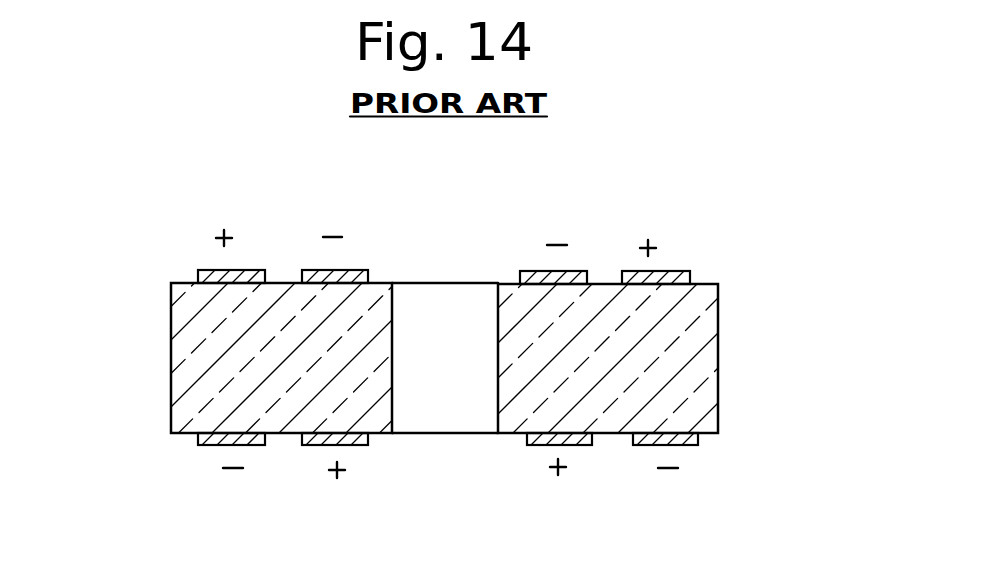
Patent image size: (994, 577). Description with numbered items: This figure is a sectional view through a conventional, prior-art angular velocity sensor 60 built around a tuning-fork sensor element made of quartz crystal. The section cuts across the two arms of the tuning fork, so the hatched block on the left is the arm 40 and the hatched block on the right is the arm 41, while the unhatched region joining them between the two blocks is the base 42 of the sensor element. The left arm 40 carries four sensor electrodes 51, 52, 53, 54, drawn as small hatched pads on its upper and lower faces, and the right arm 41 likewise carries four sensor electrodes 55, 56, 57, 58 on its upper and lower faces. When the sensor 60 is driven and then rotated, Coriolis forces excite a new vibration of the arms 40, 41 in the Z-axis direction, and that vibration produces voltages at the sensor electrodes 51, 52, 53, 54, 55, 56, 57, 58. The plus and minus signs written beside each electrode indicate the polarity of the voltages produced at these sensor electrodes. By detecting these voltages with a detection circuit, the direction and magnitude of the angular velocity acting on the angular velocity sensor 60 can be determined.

The arm 40 is at (195, 323).
The arm 41 is at (697, 410).
The base 42 is at (455, 415).
The sensor electrode 51 is at (212, 440).
The sensor electrode 52 is at (310, 445).
The sensor electrode 53 is at (250, 268).
The sensor electrode 54 is at (348, 268).
The sensor electrode 55 is at (540, 443).
The sensor electrode 56 is at (647, 445).
The sensor electrode 57 is at (572, 268).
The sensor electrode 58 is at (670, 270).
The angular velocity sensor 60 is at (462, 267).